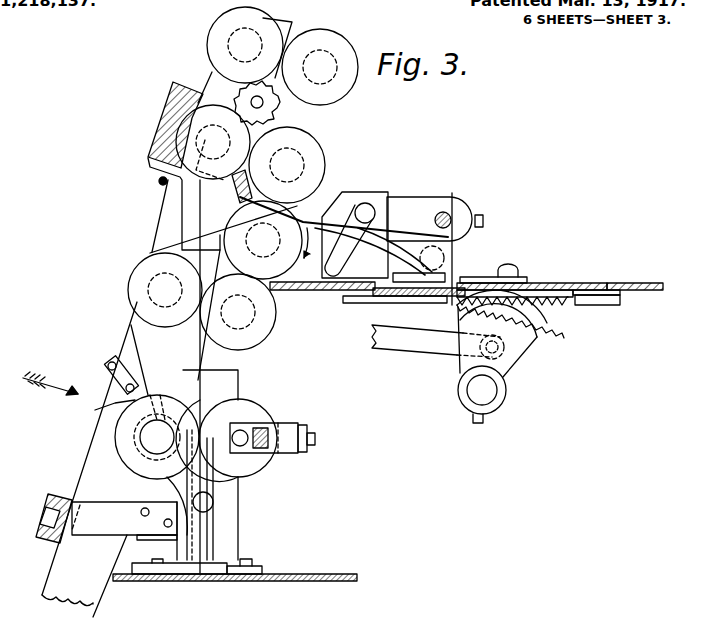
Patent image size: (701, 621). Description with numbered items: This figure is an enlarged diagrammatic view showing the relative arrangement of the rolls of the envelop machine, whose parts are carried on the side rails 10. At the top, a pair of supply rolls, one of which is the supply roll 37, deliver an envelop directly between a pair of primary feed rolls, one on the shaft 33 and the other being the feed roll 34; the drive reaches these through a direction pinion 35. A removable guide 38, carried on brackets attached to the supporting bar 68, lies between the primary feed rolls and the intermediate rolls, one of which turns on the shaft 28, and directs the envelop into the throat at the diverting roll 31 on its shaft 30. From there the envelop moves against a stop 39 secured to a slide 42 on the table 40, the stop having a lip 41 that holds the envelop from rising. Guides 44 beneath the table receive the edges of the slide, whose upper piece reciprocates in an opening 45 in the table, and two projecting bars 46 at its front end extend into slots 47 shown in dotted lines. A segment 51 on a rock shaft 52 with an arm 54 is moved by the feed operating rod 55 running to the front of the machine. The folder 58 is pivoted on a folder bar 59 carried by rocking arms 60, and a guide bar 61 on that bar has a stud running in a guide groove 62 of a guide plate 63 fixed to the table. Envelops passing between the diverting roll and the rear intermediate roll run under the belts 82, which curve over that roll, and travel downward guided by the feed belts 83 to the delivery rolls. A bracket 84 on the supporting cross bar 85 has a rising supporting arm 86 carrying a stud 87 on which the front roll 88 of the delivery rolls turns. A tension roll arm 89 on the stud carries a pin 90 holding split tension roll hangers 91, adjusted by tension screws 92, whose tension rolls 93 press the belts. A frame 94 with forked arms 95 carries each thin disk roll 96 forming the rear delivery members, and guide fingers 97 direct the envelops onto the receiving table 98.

The side rails 10 is at (172, 210).
The shaft of intermediate roll 28 is at (150, 290).
The shaft of diverting roll 30 is at (244, 257).
The diverting roll 31 is at (244, 268).
The shaft of primary feed roll 33 is at (305, 152).
The primary feed roll 34 is at (202, 90).
The direction pinion 35 is at (270, 109).
The supply roll 37 is at (265, 19).
The guide 38 is at (233, 186).
The stop 39 is at (472, 280).
The table 40 is at (645, 283).
The lip 41 is at (412, 238).
The slide 42 is at (570, 283).
The guides 44 is at (384, 309).
The opening 45 is at (612, 290).
The projecting bars 46 is at (410, 292).
The slots 47 is at (322, 298).
The segment 51 is at (542, 321).
The rock shaft 52 is at (484, 391).
The arm 54 is at (505, 368).
The feed operating rod 55 is at (434, 347).
The folder 58 is at (385, 226).
The folder bar 59 is at (470, 202).
The rocking arms 60 is at (483, 227).
The guide bar 61 is at (446, 212).
The guide groove 62 is at (368, 203).
The guide plate 63 is at (344, 192).
The supporting bar 68 is at (148, 148).
The belts 82 is at (170, 246).
The feed belts 83 is at (133, 332).
The bracket 84 is at (88, 525).
The supporting cross bar 85 is at (40, 540).
The supporting arm 86 is at (145, 487).
The stud 87 is at (150, 440).
The front roll 88 is at (197, 416).
The tension roll arm 89 is at (112, 404).
The pin 90 is at (108, 363).
The tension roll hangers 91 is at (124, 386).
The tension screws 92 is at (108, 368).
The tension rolls 93 is at (143, 386).
The frame 94 is at (311, 432).
The forked arms 95 is at (292, 421).
The roll 96 is at (262, 409).
The guide fingers 97 is at (195, 511).
The receiving table 98 is at (290, 576).